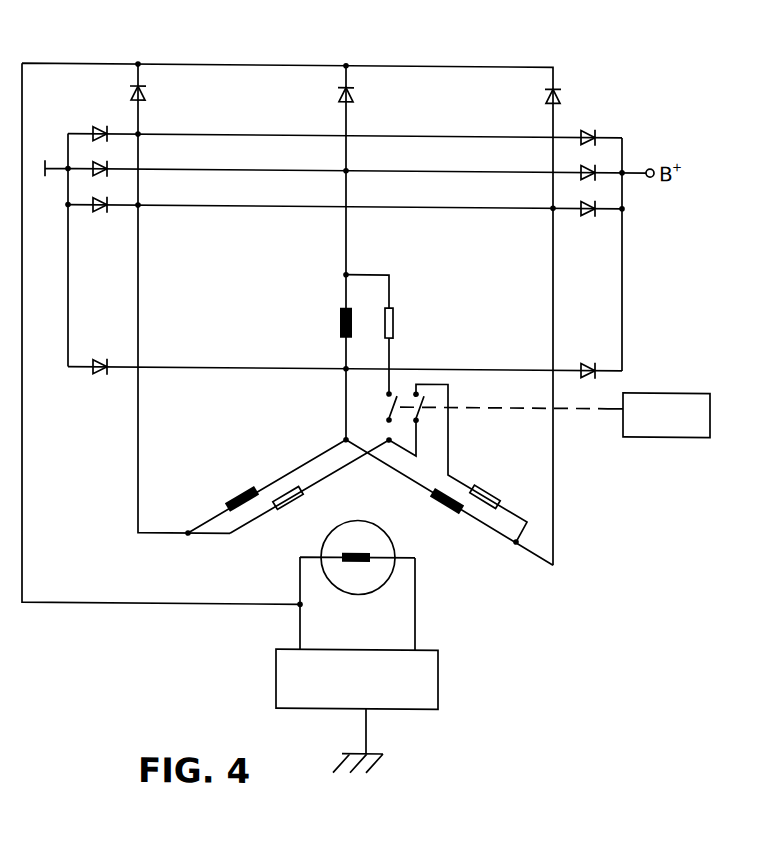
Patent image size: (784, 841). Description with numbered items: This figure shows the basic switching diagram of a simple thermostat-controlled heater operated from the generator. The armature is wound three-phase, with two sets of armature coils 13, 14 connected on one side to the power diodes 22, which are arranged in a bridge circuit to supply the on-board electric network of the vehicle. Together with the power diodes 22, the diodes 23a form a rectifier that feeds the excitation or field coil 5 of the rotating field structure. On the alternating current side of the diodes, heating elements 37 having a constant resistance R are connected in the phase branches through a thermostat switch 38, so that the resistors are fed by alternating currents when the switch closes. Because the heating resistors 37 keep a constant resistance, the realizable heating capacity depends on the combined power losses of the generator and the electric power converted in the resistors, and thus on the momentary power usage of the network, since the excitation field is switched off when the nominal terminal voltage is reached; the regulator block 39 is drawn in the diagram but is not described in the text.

The power diodes 22 is at (90, 200).
The diodes 23a is at (540, 96).
The armature coils 13 is at (318, 420).
The armature coils 14 is at (340, 315).
The heating elements 37 is at (400, 315).
The field coil 5 is at (372, 547).
The thermostat switch 38 is at (655, 388).
The voltage regulator 39 is at (440, 681).